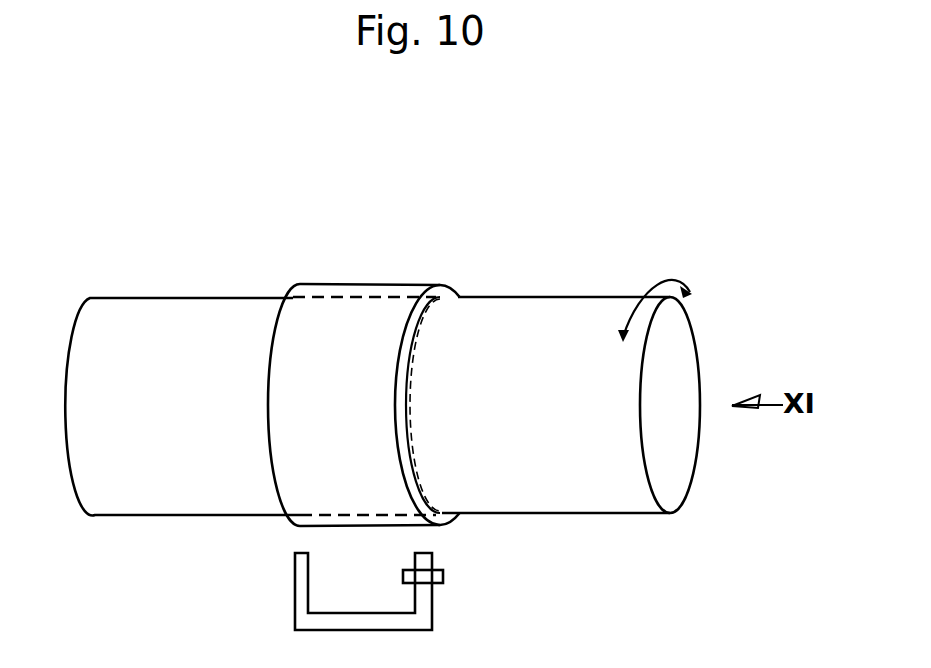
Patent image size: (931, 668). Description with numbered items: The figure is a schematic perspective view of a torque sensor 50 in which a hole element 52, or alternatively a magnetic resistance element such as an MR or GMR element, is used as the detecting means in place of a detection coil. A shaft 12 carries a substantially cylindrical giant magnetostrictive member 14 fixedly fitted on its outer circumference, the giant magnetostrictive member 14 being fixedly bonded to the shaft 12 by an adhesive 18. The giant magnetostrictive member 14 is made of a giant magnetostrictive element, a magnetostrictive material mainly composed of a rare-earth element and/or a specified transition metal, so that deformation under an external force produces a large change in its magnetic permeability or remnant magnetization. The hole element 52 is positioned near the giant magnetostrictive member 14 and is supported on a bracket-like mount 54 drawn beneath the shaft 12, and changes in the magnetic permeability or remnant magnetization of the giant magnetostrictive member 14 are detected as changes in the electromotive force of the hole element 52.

The shaft 12 is at (568, 308).
The giant magnetostrictive member 14 is at (352, 284).
The adhesive 18 is at (412, 415).
The torque sensor 50 is at (422, 185).
The hole element 52 is at (445, 575).
The bracket 54 is at (425, 610).